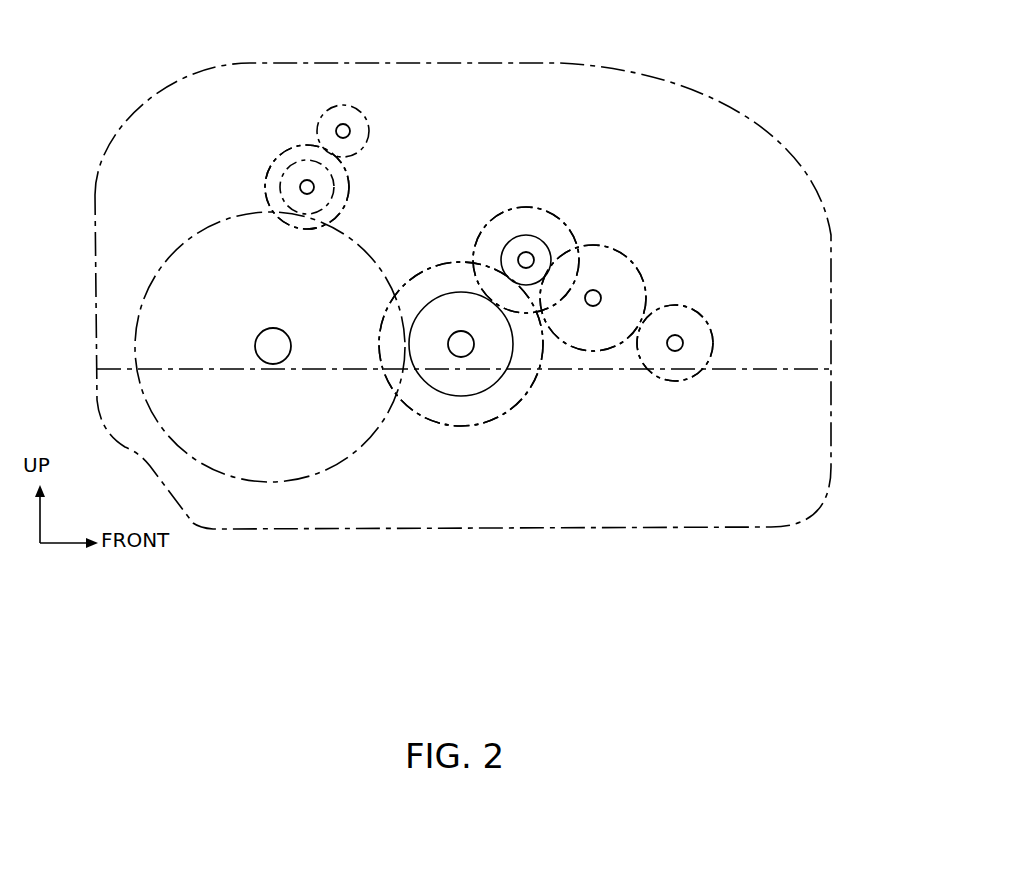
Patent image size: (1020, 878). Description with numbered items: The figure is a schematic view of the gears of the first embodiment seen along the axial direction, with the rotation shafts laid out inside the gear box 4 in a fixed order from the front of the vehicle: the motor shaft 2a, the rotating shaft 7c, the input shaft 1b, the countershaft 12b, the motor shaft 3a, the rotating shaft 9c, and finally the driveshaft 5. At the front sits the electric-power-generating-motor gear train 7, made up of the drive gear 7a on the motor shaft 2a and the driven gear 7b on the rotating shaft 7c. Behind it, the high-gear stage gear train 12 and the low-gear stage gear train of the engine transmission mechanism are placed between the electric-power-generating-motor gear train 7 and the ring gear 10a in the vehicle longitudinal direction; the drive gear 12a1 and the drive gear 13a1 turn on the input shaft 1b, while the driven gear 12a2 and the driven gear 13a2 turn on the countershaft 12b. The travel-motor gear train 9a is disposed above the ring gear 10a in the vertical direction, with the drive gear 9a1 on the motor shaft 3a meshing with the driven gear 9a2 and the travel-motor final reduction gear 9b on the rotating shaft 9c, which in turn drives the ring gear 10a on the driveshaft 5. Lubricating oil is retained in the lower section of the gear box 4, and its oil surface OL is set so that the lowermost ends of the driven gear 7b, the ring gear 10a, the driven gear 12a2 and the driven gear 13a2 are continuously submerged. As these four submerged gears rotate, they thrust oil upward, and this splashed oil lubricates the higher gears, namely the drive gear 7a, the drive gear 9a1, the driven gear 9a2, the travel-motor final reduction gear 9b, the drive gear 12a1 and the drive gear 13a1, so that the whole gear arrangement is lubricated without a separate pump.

The gear box 4 is at (762, 137).
The oil surface OL is at (806, 368).
The ring gear 10a is at (292, 482).
The driveshaft 5 is at (255, 346).
The travel-motor gear train 9a is at (300, 131).
The drive gear 9a1 is at (328, 112).
The driven gear 9a2 is at (267, 205).
The travel-motor final reduction gear 9b is at (292, 165).
The rotating shaft 9c is at (300, 187).
The motor shaft 3a is at (342, 123).
The high-gear stage gear train 12 is at (452, 238).
The drive gear 12a1 is at (561, 217).
The drive gear 13a1 is at (503, 247).
The input shaft 1b is at (523, 252).
The driven gear 12a2 is at (490, 421).
The driven gear 13a2 is at (425, 418).
The countershaft 12b is at (450, 355).
The electric-power-generating-motor gear train 7 is at (673, 286).
The drive gear 7a is at (630, 253).
The rotating shaft 7c is at (600, 290).
The driven gear 7b is at (698, 311).
The motor shaft 2a is at (684, 343).